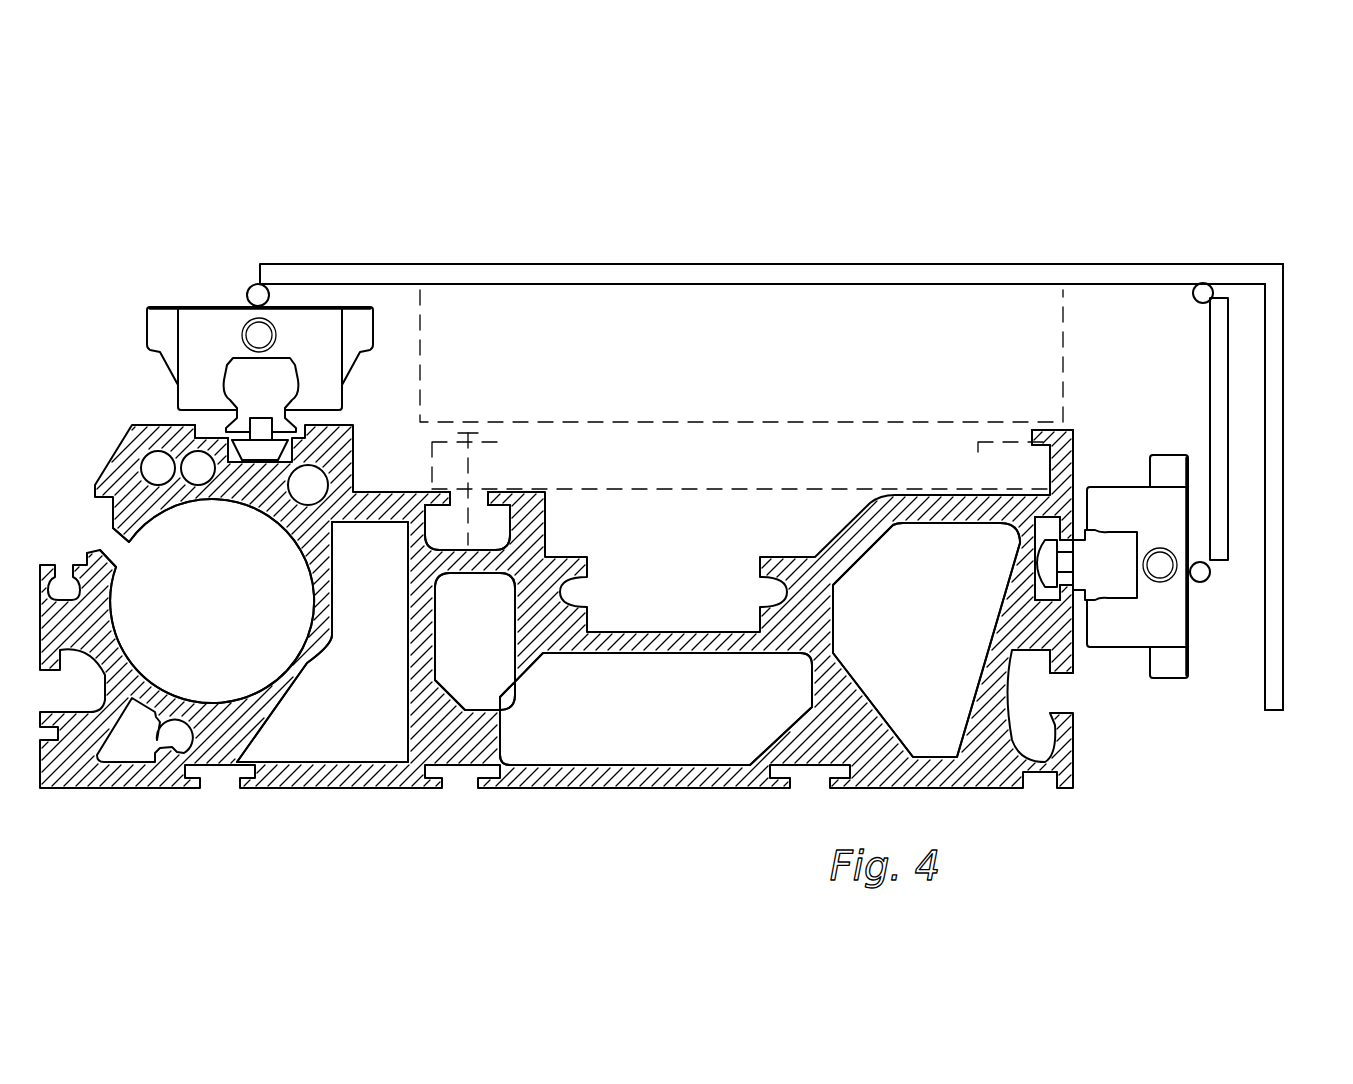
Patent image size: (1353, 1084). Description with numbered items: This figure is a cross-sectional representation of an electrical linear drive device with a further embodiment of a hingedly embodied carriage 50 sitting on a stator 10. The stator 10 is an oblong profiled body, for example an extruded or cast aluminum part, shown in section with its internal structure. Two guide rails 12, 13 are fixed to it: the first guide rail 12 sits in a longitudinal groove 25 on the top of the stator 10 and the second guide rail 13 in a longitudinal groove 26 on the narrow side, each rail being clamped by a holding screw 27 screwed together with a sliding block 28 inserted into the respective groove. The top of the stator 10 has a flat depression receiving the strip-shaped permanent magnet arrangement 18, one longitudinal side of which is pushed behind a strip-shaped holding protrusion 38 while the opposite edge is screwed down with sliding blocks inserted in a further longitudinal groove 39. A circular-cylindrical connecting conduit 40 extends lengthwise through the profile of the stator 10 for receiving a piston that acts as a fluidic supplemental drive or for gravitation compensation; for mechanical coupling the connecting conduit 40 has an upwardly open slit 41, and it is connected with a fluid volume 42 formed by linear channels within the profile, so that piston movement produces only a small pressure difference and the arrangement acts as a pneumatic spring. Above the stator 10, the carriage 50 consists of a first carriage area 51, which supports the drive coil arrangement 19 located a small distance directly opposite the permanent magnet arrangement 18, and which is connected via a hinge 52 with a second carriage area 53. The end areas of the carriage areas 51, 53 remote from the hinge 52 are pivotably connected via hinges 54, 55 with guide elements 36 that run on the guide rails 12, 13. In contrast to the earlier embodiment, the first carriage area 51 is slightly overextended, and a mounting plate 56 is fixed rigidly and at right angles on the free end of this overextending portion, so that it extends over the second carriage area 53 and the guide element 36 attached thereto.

The stator 10 is at (70, 790).
The guide rail 12 is at (258, 385).
The guide rail 13 is at (1115, 590).
The permanent magnet arrangement 18 is at (668, 458).
The drive coil arrangement 19 is at (753, 330).
The longitudinal groove 25 is at (238, 445).
The longitudinal groove 26 is at (1045, 590).
The holding screw 27 is at (268, 420).
The sliding block 28 is at (300, 445).
The guide element 36 is at (213, 320).
The holding protrusion 38 is at (1063, 435).
The longitudinal groove 39 is at (487, 537).
The connecting conduit 40 is at (192, 602).
The slit 41 is at (108, 540).
The fluid volume 42 is at (355, 672).
The carriage 50 is at (789, 427).
The first carriage area 51 is at (1017, 268).
The hinge 52 is at (1195, 297).
The second carriage area 53 is at (1212, 352).
The hinge 54 is at (256, 285).
The hinge 55 is at (1210, 575).
The mounting plate 56 is at (1283, 428).